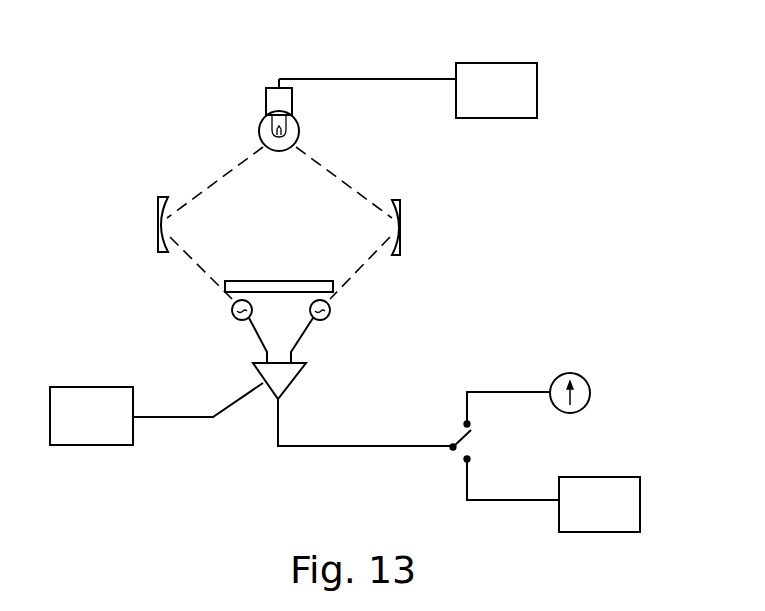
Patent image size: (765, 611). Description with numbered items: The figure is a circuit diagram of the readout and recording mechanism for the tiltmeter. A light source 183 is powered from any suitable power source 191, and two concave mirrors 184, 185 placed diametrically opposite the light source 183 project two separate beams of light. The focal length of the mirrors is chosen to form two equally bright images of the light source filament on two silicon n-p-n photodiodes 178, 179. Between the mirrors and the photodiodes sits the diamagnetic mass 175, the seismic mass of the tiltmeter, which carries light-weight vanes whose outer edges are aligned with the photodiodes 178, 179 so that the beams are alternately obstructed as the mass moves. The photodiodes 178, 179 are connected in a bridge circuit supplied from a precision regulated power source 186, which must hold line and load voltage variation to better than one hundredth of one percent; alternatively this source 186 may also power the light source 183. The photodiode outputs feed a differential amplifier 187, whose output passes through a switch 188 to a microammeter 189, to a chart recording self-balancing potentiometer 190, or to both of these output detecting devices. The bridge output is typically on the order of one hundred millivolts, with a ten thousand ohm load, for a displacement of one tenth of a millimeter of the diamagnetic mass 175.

The diamagnetic mass 175 is at (272, 282).
The photodiode 178 is at (233, 311).
The photodiode 179 is at (330, 312).
The light source 183 is at (292, 128).
The concave mirror 184 is at (160, 216).
The concave mirror 185 is at (399, 225).
The precision regulated power source 186 is at (100, 438).
The differential amplifier 187 is at (283, 387).
The switch 188 is at (468, 441).
The microammeter 189 is at (575, 385).
The chart recording self-balancing potentiometer 190 is at (608, 487).
The power source 191 is at (537, 92).